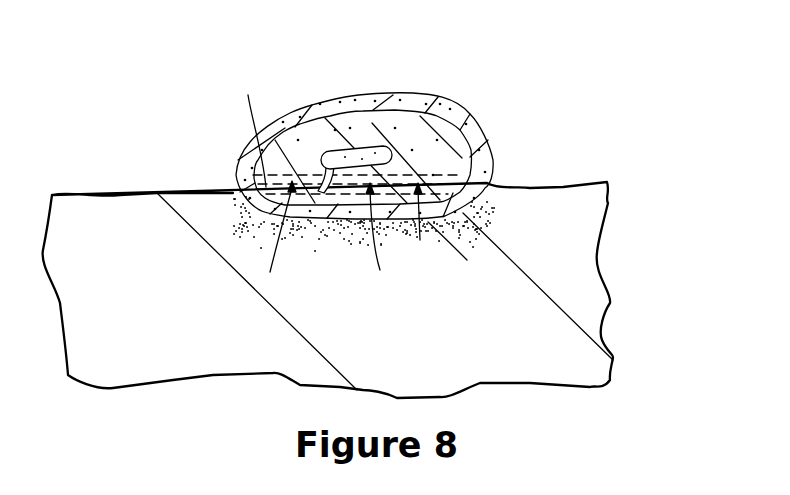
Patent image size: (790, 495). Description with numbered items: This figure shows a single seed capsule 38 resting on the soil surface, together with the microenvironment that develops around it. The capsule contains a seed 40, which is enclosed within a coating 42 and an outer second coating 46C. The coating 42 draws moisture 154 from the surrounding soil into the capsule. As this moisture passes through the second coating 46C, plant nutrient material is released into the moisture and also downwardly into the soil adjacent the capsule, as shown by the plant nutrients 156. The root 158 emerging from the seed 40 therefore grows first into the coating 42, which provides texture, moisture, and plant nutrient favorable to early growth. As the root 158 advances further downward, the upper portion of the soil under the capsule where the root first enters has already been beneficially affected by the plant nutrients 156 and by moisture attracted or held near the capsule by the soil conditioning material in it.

The hardfacing deposit 38 is at (382, 126).
The second coating 46C is at (481, 143).
The coating 42 is at (368, 127).
The hard particle 40 is at (343, 147).
The root 158 is at (314, 178).
The moisture 154 is at (232, 133).
The plant nutrients 156 is at (408, 252).